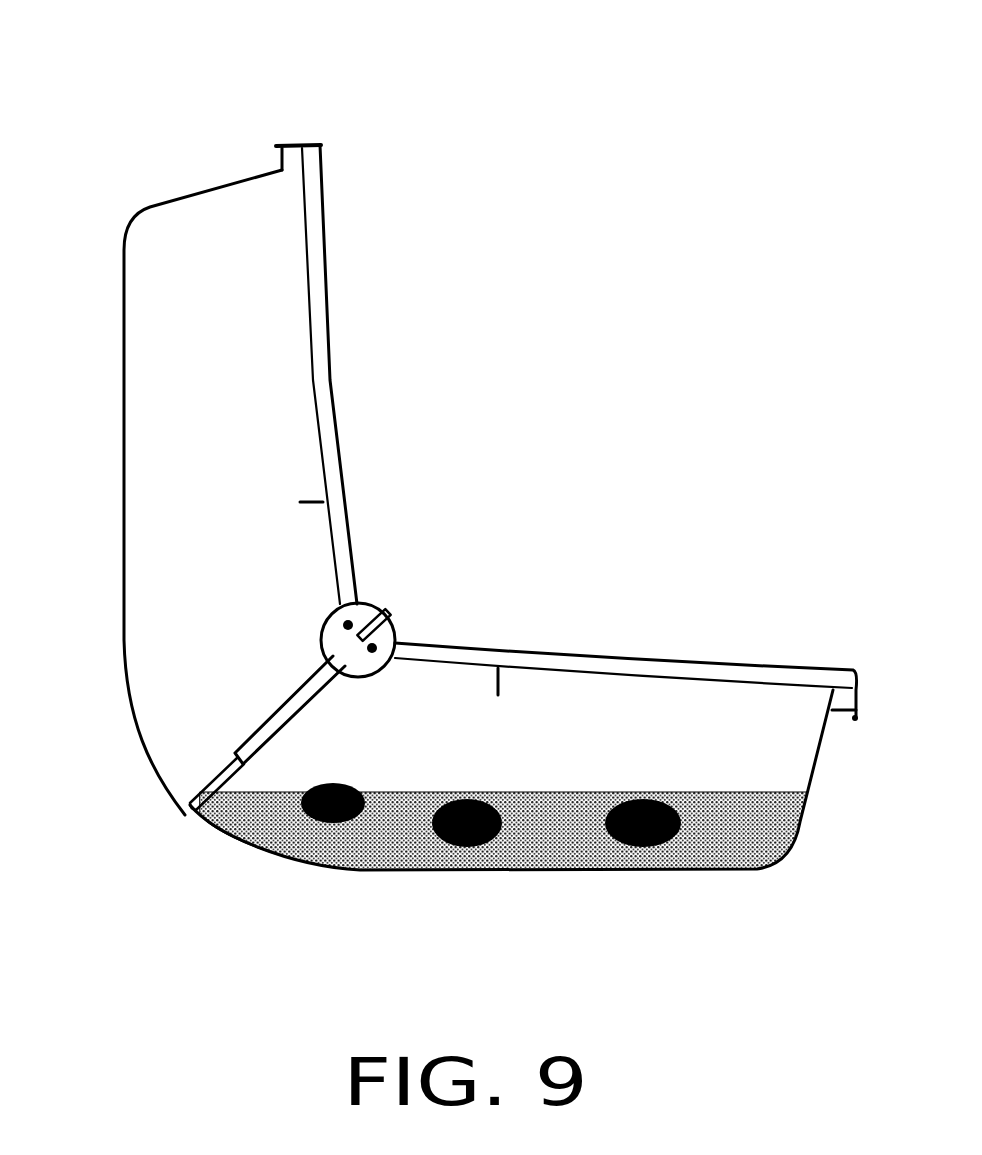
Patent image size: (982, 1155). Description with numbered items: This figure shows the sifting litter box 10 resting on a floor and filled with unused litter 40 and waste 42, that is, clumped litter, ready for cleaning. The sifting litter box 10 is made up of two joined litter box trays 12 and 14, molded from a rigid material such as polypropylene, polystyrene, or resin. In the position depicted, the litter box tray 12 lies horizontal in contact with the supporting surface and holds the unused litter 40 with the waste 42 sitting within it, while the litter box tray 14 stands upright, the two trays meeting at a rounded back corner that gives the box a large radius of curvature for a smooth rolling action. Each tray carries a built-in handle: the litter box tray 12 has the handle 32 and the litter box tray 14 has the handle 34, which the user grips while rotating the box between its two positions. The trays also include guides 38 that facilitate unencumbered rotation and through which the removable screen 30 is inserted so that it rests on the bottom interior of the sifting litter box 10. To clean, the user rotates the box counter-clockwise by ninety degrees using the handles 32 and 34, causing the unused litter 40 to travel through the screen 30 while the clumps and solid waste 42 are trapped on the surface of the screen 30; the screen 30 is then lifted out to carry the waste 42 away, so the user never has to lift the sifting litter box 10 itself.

The sifting litter box 10 is at (478, 465).
The litter box tray 12 is at (637, 727).
The litter box tray 14 is at (195, 267).
The removable screen 30 is at (390, 615).
The handle 32 is at (837, 707).
The handle 34 is at (293, 143).
The guides 38 is at (185, 810).
The unused litter 40 is at (252, 820).
The waste 42 is at (617, 843).